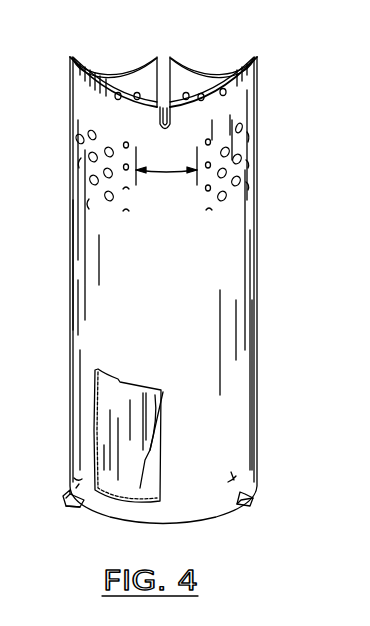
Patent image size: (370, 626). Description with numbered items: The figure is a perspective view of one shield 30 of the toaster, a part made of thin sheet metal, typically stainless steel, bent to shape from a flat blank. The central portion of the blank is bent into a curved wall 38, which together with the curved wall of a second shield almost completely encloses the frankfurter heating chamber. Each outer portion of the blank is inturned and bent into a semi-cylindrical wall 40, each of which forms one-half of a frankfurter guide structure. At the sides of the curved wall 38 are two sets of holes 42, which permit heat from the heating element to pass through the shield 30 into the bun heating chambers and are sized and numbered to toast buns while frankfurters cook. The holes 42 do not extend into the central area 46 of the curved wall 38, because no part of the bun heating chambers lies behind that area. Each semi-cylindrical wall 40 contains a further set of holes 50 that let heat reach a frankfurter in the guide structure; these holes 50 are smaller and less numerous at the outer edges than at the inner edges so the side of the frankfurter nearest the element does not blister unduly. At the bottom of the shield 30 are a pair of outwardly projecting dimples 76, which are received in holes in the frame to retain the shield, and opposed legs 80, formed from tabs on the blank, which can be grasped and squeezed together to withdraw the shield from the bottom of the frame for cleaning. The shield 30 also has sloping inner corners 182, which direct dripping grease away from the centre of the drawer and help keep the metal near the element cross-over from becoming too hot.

The shield 30 is at (262, 82).
The curved wall 38 is at (128, 261).
The semi-cylindrical wall 40 is at (112, 76).
The holes 42 is at (88, 173).
The central area 46 is at (166, 172).
The holes 50 is at (121, 90).
The dimples 76 is at (76, 480).
The legs 80 is at (67, 502).
The sloping inner corners 182 is at (135, 462).